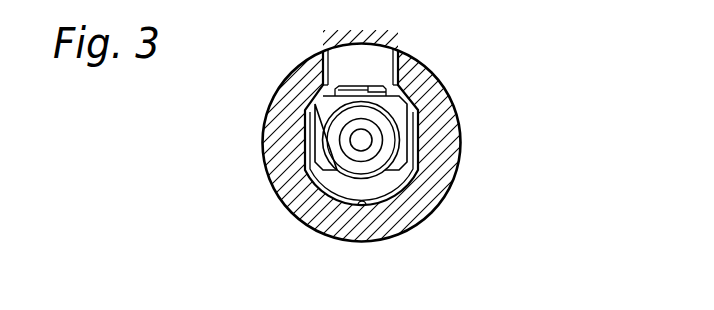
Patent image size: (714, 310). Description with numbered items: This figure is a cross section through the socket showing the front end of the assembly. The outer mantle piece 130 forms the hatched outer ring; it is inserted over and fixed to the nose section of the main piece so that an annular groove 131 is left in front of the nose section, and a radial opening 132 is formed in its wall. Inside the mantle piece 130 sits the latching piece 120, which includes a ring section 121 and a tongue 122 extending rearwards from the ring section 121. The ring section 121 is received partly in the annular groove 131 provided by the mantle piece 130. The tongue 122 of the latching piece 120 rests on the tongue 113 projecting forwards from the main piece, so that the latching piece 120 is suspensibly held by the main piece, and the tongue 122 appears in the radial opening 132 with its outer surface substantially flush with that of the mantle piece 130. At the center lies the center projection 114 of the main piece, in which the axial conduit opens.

The mantle piece 130 is at (507, 197).
The latching piece 120 is at (380, 187).
The ring section 121 is at (348, 192).
The tongue 122 is at (368, 52).
The radial opening 132 is at (338, 50).
The tongue 113 is at (387, 92).
The center projection 114 is at (343, 138).
The annular groove 131 is at (366, 212).